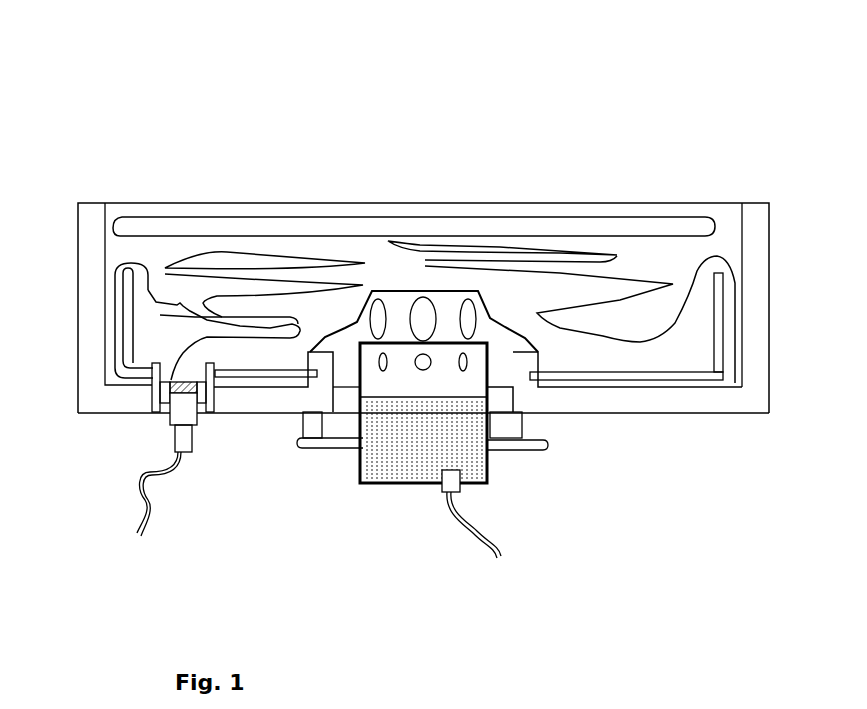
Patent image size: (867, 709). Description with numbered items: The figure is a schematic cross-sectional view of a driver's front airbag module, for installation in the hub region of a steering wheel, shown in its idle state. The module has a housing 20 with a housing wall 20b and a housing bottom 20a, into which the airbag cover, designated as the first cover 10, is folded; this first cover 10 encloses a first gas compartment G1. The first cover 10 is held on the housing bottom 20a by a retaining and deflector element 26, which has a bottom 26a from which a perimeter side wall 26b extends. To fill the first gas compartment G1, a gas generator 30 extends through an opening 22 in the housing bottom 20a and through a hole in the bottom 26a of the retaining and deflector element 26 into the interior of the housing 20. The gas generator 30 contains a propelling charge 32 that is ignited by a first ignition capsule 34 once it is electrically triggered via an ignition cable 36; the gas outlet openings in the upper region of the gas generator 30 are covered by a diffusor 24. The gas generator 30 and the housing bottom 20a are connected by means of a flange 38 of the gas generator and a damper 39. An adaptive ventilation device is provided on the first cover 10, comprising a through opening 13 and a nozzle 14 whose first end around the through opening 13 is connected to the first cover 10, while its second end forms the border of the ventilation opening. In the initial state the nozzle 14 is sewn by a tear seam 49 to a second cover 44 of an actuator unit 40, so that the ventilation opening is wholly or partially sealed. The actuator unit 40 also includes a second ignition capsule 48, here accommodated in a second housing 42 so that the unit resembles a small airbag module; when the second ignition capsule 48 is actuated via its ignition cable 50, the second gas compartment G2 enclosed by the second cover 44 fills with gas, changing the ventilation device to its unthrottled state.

The first cover 10 is at (578, 218).
The through opening 13 is at (188, 300).
The nozzle 14 is at (242, 317).
The housing 20 is at (426, 426).
The housing bottom 20a is at (683, 407).
The housing wall 20b is at (757, 242).
The opening 22 is at (520, 412).
The diffusor 24 is at (422, 290).
The retaining and deflector element 26 is at (524, 394).
The bottom 26a is at (608, 373).
The perimeter side wall 26b is at (716, 320).
The gas generator 30 is at (397, 390).
The propelling charge 32 is at (390, 465).
The first ignition capsule 34 is at (463, 485).
The ignition cable 36 is at (463, 532).
The flange 38 is at (533, 445).
The damper 39 is at (547, 442).
The actuator unit 40 is at (160, 408).
The second housing 42 is at (197, 410).
The second cover 44 is at (135, 357).
The second ignition capsule 48 is at (187, 417).
The tear seam 49 is at (200, 320).
The ignition cable 50 is at (142, 500).
The first gas compartment G1 is at (370, 233).
The second gas compartment G2 is at (150, 392).